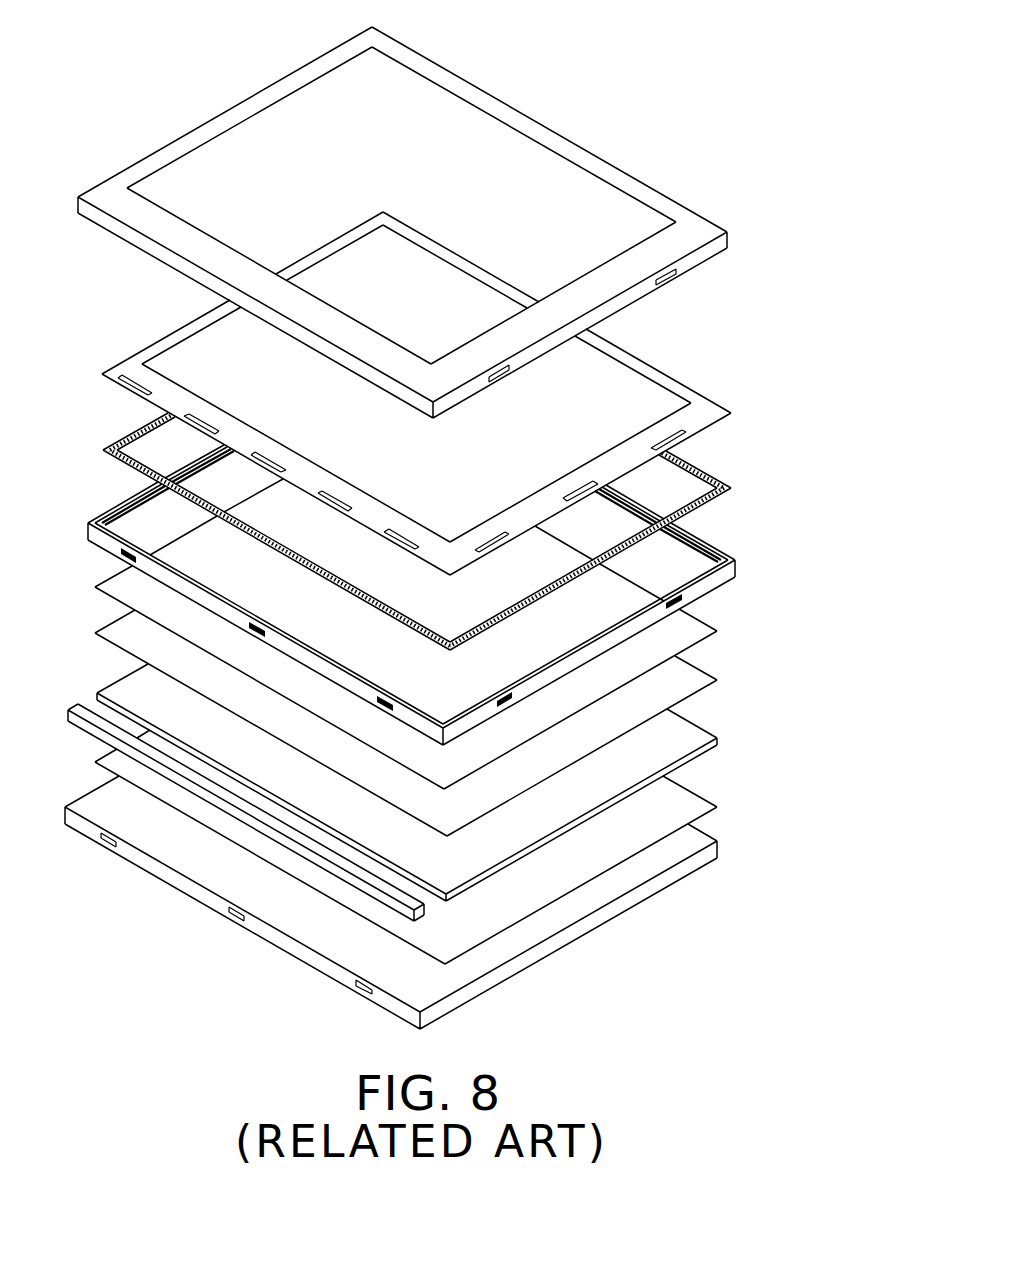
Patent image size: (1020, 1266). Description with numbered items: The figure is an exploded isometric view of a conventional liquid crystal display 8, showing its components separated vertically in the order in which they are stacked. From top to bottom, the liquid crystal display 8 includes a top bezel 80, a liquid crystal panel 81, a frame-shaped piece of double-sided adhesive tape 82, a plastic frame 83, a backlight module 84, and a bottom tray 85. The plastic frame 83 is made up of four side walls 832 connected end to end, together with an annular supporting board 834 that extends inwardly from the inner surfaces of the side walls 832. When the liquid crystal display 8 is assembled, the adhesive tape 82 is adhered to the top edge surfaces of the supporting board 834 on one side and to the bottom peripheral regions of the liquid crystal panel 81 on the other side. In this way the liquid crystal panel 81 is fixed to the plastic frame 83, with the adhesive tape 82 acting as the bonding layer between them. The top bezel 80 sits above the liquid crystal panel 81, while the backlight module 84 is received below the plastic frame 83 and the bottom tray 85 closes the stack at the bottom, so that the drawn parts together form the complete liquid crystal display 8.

The liquid crystal display 8 is at (424, 514).
The top bezel 80 is at (667, 207).
The liquid crystal panel 81 is at (660, 397).
The double-sided adhesive tape 82 is at (700, 468).
The plastic frame 83 is at (702, 532).
The side walls 832 is at (724, 569).
The annular supporting board 834 is at (137, 512).
The backlight module 84 is at (720, 627).
The bottom tray 85 is at (693, 860).